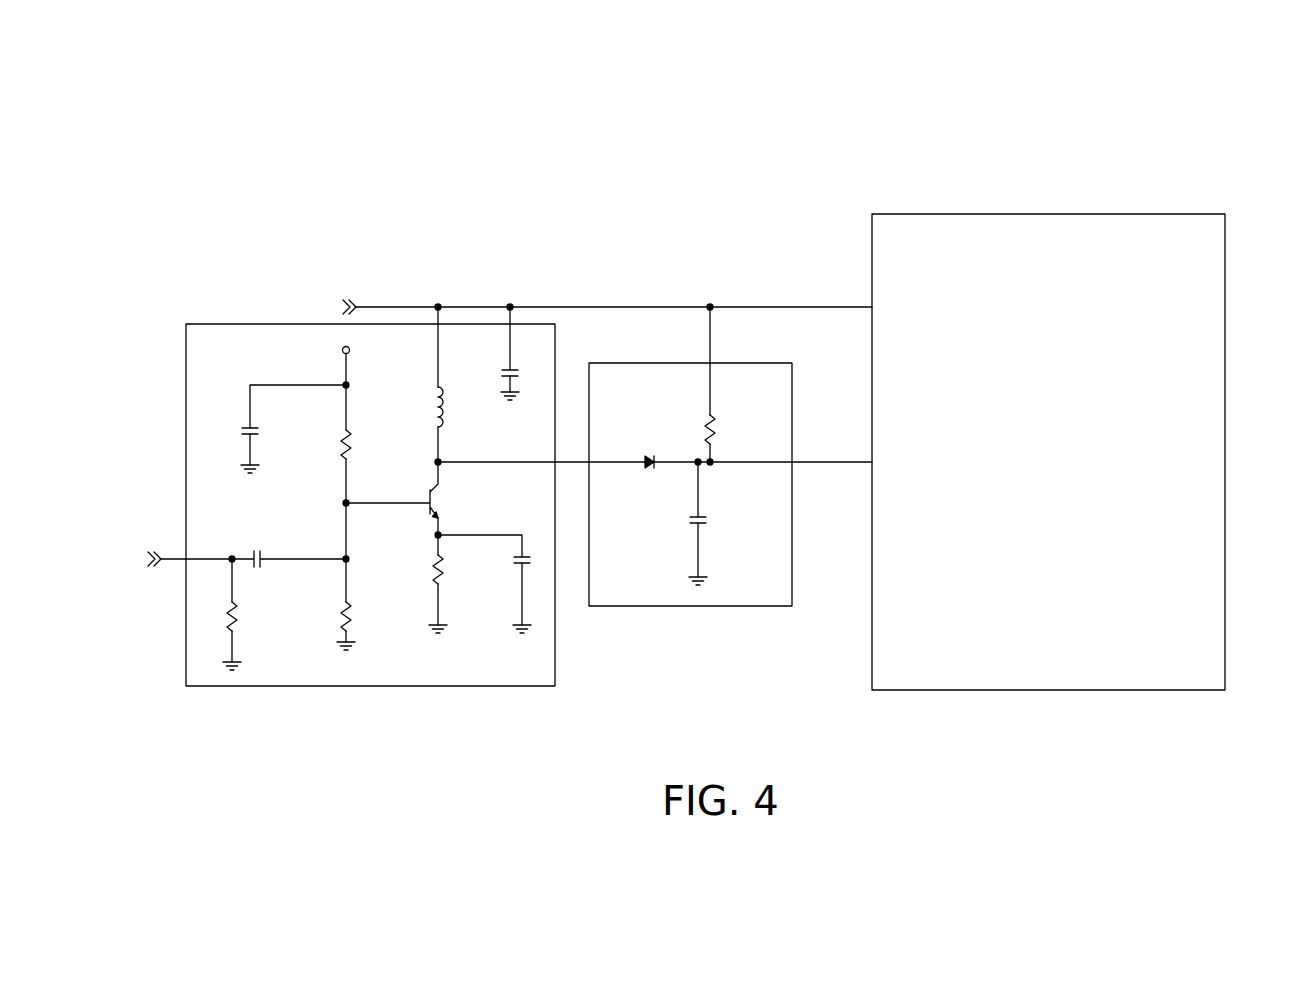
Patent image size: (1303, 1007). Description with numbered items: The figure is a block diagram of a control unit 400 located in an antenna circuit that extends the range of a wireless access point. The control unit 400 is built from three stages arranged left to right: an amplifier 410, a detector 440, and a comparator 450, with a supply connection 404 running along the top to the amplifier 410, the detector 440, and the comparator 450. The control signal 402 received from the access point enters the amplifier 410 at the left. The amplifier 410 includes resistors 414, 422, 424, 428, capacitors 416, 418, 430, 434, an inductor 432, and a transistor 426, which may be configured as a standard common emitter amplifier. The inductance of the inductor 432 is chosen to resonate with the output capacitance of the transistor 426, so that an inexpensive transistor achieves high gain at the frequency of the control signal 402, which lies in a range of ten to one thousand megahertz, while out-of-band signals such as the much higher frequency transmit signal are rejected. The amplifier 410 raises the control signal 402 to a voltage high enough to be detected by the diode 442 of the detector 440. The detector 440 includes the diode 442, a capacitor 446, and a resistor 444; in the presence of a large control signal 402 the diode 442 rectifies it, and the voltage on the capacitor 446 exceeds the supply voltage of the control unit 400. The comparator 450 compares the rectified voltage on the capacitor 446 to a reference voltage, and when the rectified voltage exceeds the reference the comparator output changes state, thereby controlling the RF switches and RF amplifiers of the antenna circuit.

The control unit 400 is at (689, 103).
The control signal 402 is at (170, 559).
The supply voltage input 404 is at (593, 287).
The amplifier 410 is at (445, 686).
The resistor 414 is at (217, 613).
The capacitor 416 is at (289, 549).
The capacitor 418 is at (276, 427).
The resistor 422 is at (369, 466).
The resistor 424 is at (370, 575).
The transistor 426 is at (418, 500).
The resistor 428 is at (416, 485).
The capacitor 430 is at (484, 584).
The inductor 432 is at (420, 386).
The capacitor 434 is at (492, 353).
The detector 440 is at (695, 606).
The diode 442 is at (655, 478).
The resistor 444 is at (688, 386).
The capacitor 446 is at (724, 522).
The comparator 450 is at (919, 690).